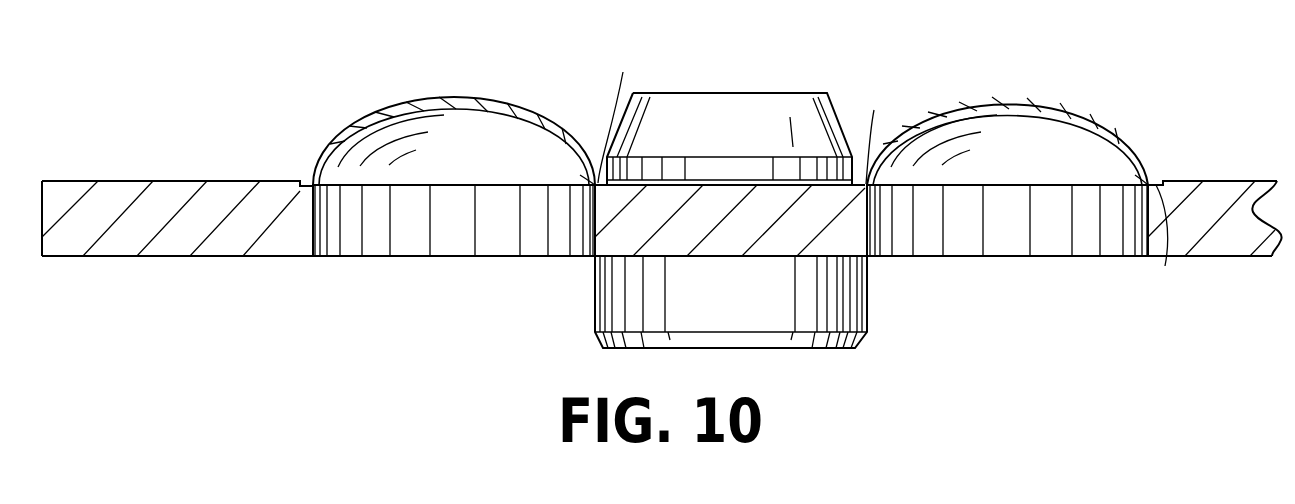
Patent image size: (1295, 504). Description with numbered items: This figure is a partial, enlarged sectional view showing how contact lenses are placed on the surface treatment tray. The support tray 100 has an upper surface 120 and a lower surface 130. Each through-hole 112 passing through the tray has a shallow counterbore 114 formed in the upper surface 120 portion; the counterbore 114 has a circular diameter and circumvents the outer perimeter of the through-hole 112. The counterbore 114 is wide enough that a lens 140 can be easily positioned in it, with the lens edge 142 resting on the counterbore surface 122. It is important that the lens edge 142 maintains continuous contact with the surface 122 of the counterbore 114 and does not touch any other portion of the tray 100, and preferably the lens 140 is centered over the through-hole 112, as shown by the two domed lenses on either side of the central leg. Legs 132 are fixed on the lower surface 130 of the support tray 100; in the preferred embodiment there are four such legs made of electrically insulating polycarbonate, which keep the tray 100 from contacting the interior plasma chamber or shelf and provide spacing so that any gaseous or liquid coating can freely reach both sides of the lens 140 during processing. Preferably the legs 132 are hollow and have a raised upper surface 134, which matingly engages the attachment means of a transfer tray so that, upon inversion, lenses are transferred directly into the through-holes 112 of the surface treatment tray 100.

The support tray 100 is at (662, 210).
The through-hole 112 is at (528, 234).
The counterbore 114 is at (309, 183).
The upper surface 120 is at (200, 181).
The counterbore surface 122 is at (898, 174).
The lower surface 130 is at (230, 257).
The legs 132 is at (785, 303).
The raised upper surface 134 is at (768, 93).
The lens 140 is at (509, 101).
The lens edge 142 is at (592, 180).